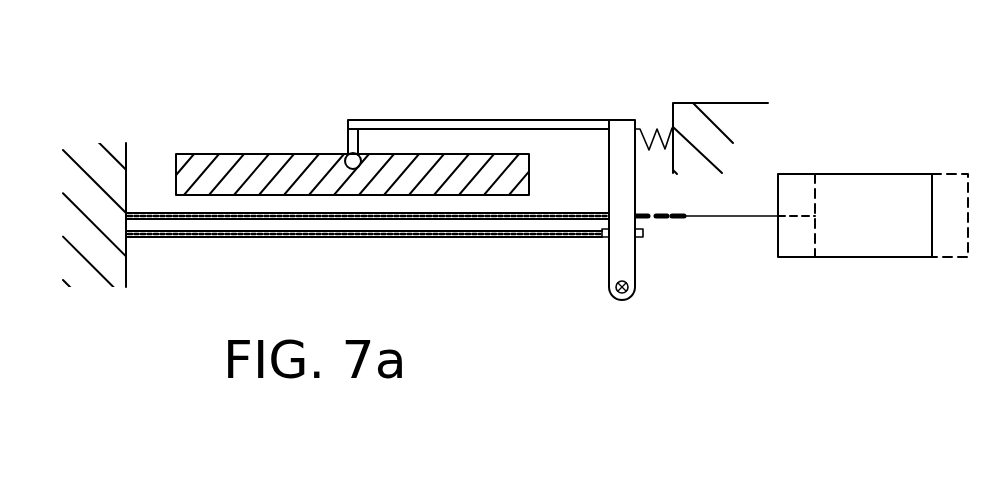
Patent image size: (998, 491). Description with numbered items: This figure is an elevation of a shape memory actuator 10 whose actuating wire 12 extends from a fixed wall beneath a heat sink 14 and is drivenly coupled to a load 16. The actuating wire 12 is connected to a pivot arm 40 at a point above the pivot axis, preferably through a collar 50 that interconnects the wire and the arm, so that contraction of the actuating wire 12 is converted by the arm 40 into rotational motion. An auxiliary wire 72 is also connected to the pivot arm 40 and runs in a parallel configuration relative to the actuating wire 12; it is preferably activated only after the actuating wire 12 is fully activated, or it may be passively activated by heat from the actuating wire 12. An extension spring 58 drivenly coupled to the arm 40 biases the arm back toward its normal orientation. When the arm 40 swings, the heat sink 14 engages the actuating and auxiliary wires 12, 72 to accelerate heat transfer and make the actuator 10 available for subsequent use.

The actuator 10 is at (171, 84).
The actuating wire 12 is at (246, 220).
The heat sink 14 is at (247, 154).
The load 16 is at (893, 229).
The pivot arm 40 is at (505, 96).
The collar 50 is at (643, 237).
The extension spring 58 is at (654, 128).
The auxiliary wire 72 is at (332, 238).